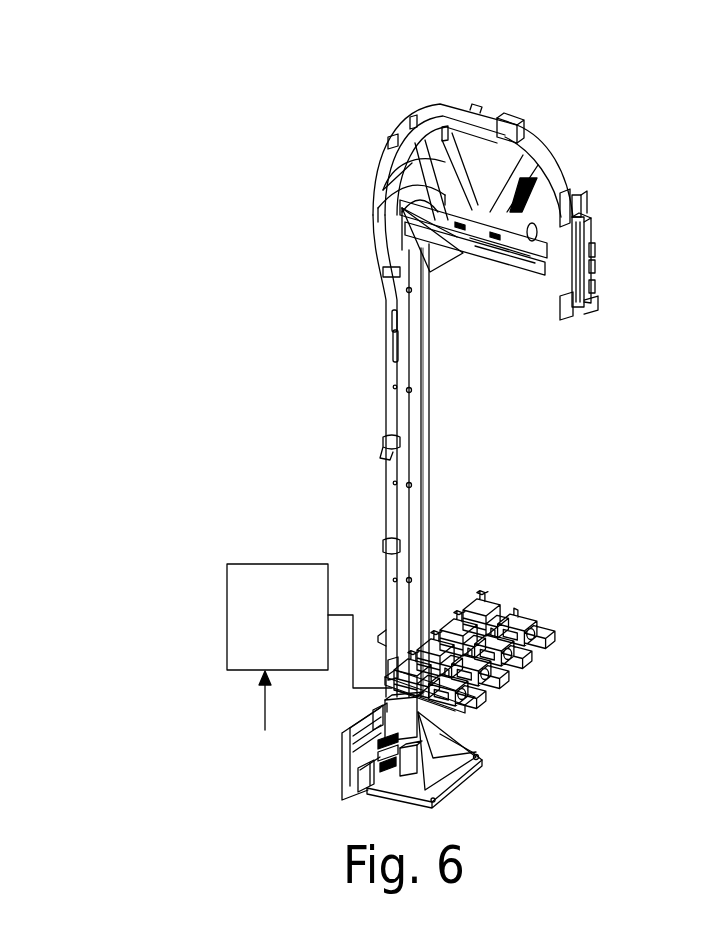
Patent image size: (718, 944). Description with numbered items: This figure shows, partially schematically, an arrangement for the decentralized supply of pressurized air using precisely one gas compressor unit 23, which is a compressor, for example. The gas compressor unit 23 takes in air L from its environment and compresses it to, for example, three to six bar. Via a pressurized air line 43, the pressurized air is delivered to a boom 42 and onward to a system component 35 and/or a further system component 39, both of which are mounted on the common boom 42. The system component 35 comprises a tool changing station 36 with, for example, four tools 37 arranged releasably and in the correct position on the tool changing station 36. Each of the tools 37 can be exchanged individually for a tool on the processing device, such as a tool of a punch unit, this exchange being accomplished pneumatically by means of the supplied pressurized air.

The boom 42 is at (355, 226).
The further system component 39 is at (606, 264).
The system component 35 is at (538, 594).
The tool changing station 36 is at (562, 632).
The tools 37 is at (548, 642).
The gas compressor unit 23 is at (237, 621).
The pressurized air line 43 is at (333, 612).
The air L is at (263, 703).